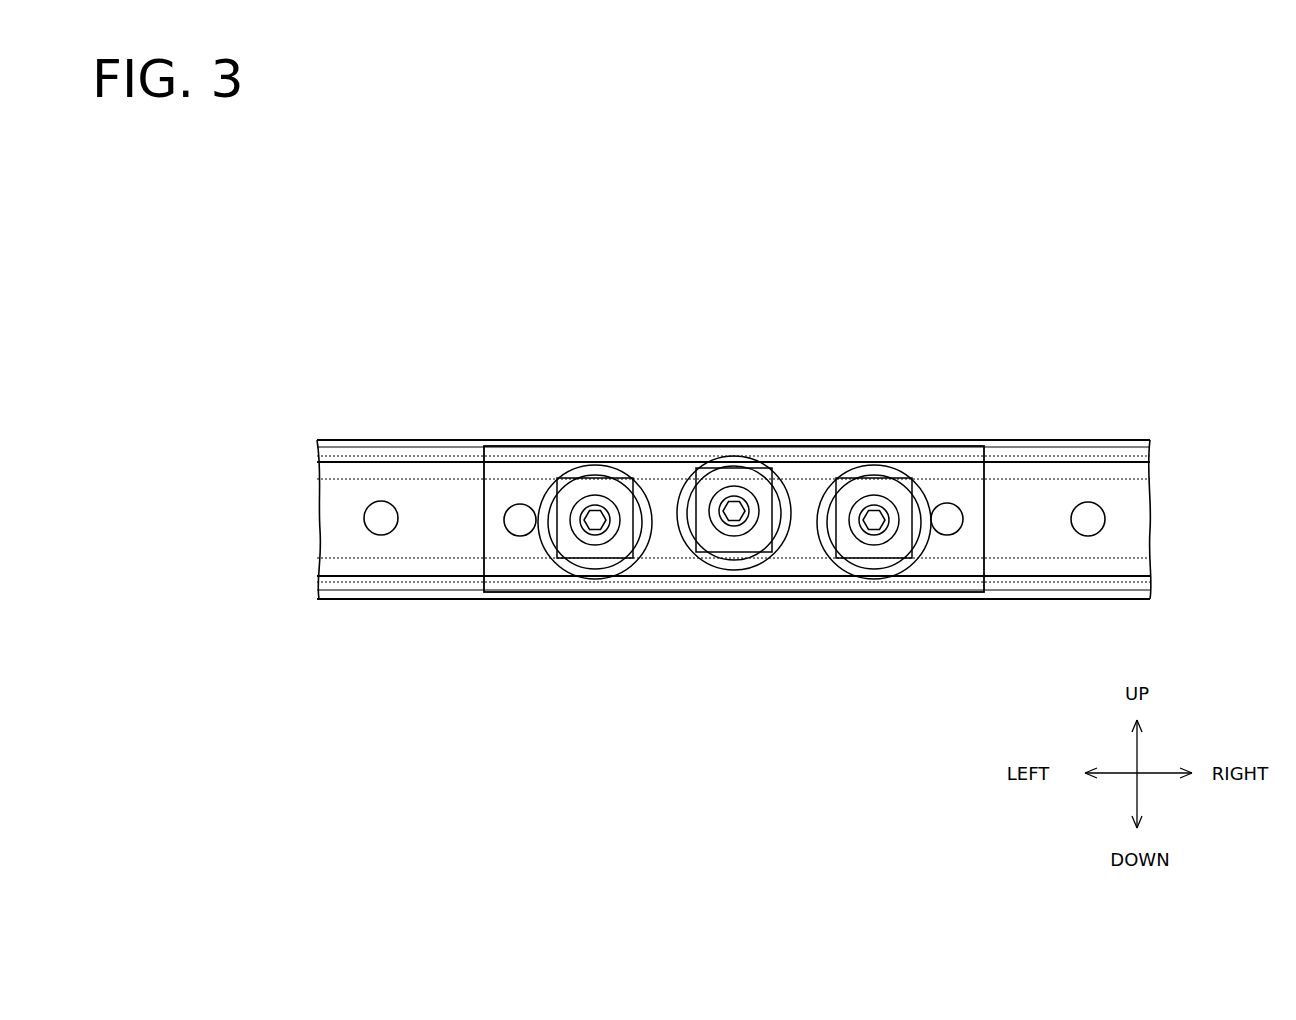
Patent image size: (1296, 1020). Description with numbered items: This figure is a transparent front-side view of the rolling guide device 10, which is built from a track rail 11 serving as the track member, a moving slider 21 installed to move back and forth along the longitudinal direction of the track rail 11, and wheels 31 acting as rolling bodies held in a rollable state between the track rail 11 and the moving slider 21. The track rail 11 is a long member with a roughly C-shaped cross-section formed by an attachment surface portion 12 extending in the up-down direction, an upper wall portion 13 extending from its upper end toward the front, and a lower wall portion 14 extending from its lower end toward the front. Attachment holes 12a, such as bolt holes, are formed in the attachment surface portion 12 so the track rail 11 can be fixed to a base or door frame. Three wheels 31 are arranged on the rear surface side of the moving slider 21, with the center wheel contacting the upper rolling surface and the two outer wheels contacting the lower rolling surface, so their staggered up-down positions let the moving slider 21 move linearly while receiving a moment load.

The rolling guide device 10 is at (1043, 317).
The track rail 11 is at (1031, 438).
The attachment surface portion 12 is at (437, 500).
The attachment holes 12a is at (376, 506).
The upper wall portion 13 is at (1008, 452).
The lower wall portion 14 is at (1030, 588).
The moving slider 21 is at (953, 579).
The wheels 31 is at (588, 565).